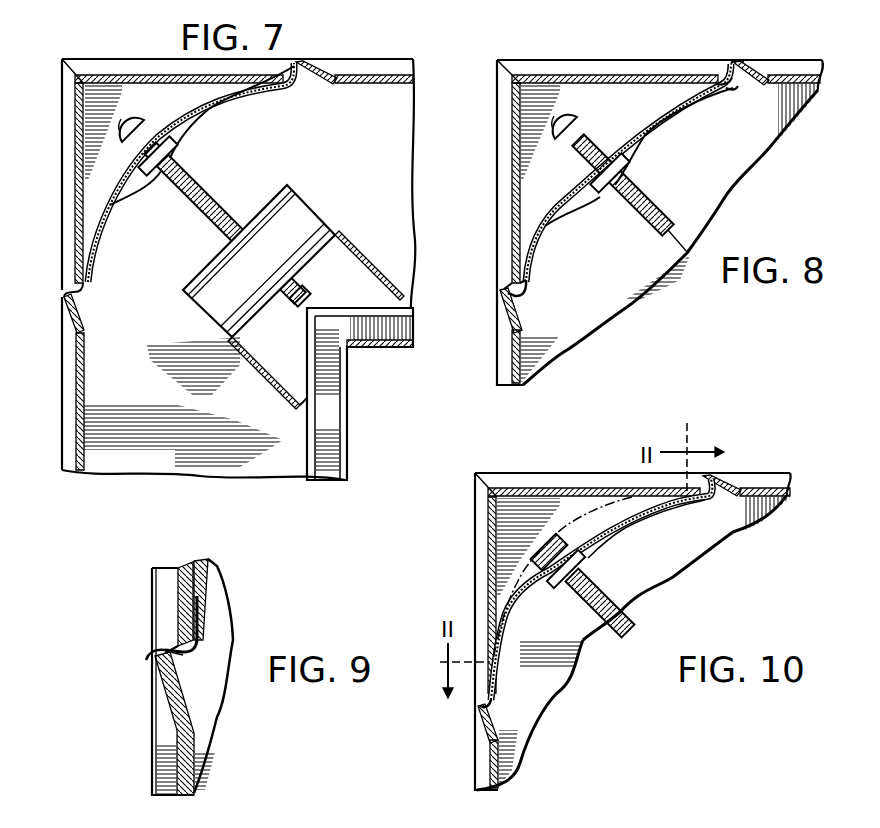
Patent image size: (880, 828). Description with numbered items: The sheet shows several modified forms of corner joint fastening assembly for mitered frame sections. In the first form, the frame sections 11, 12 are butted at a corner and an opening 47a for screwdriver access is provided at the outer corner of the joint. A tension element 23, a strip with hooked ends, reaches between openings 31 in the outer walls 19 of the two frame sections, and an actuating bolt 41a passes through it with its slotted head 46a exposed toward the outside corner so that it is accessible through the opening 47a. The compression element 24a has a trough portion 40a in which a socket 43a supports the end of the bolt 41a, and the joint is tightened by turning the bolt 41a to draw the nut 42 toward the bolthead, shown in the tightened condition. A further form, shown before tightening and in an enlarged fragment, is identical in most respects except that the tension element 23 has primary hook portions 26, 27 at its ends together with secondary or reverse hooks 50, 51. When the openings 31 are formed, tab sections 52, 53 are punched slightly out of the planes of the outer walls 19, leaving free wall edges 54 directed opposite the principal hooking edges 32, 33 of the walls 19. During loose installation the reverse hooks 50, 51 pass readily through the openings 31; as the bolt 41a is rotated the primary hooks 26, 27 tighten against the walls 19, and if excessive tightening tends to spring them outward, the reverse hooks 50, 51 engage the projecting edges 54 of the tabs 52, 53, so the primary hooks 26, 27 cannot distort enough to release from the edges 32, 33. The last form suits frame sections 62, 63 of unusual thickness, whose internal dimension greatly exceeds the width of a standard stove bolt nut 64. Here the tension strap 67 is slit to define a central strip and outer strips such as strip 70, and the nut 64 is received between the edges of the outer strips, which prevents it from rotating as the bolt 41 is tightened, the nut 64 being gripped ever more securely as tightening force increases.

In FIG. 7, the frame section 11 is at (368, 160).
In FIG. 7, the frame section 12 is at (238, 418).
In FIG. 9, the frame section 12 is at (217, 598).
In FIG. 7, the outer wall 19 is at (368, 74).
In FIG. 8, the outer wall 19 is at (573, 76).
In FIG. 9, the outer wall 19 is at (177, 583).
In FIG. 7, the tension element 23 is at (230, 104).
In FIG. 8, the tension element 23 is at (674, 114).
In FIG. 7, the compression element 24a is at (308, 228).
In FIG. 8, the primary hook portion 26 is at (521, 293).
In FIG. 9, the primary hook portion 26 is at (195, 656).
In FIG. 8, the primary hook portion 27 is at (736, 85).
In FIG. 7, the frame section opening 31 is at (305, 78).
In FIG. 8, the frame section opening 31 is at (758, 66).
In FIG. 9, the frame section opening 31 is at (175, 662).
In FIG. 8, the principal hooking edge 32 is at (528, 272).
In FIG. 8, the principal hooking edge 33 is at (715, 70).
In FIG. 7, the trough portion 40a is at (348, 248).
In FIG. 10, the bolt 41 is at (636, 627).
In FIG. 7, the actuating bolt 41a is at (192, 174).
In FIG. 8, the actuating bolt 41a is at (641, 190).
In FIG. 7, the nut 42 is at (155, 178).
In FIG. 8, the nut 42 is at (601, 193).
In FIG. 7, the socket 43a is at (312, 292).
In FIG. 7, the slotted head 46a is at (137, 116).
In FIG. 8, the slotted head 46a is at (581, 120).
In FIG. 7, the opening 47a is at (78, 99).
In FIG. 8, the opening 47a is at (517, 92).
In FIG. 8, the secondary hook 50 is at (503, 284).
In FIG. 9, the secondary hook 50 is at (157, 647).
In FIG. 8, the secondary hook 51 is at (720, 58).
In FIG. 8, the tab section 52 is at (500, 305).
In FIG. 9, the tab section 52 is at (167, 710).
In FIG. 8, the tab section 53 is at (742, 63).
In FIG. 9, the free wall edge 54 is at (147, 665).
In FIG. 10, the frame section 62 is at (723, 532).
In FIG. 10, the frame section 63 is at (540, 683).
In FIG. 10, the nut 64 is at (580, 560).
In FIG. 10, the tension strap 67 is at (663, 503).
In FIG. 10, the outer strip 70 is at (528, 600).